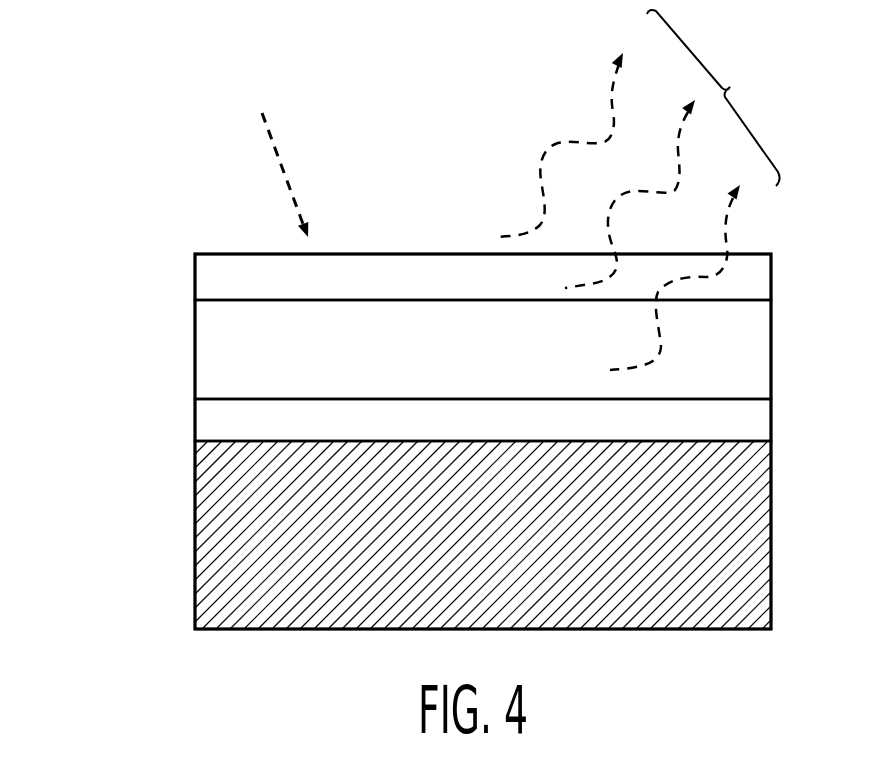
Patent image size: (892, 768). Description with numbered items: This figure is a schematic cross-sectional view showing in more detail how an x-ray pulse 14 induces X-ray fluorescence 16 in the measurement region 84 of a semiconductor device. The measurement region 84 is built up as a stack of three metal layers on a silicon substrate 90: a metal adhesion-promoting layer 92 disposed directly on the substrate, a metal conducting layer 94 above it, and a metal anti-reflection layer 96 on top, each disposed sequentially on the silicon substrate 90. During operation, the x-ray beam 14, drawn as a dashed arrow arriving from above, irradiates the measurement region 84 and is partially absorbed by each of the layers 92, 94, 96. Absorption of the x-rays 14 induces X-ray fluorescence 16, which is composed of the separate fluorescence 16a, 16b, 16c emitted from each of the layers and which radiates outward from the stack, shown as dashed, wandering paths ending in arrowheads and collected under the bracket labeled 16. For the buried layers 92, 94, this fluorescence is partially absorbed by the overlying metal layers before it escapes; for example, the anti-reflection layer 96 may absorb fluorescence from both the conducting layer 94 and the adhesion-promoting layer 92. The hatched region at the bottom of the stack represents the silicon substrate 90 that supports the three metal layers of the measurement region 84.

The x-ray pulse 14 is at (277, 151).
The X-ray fluorescence 16 is at (757, 137).
The fluorescence 16a is at (612, 112).
The fluorescence 16b is at (675, 132).
The fluorescence 16c is at (719, 213).
The measurement region 84 is at (146, 433).
The silicon substrate 90 is at (771, 580).
The metal adhesion-promoting layer 92 is at (771, 425).
The metal conducting layer 94 is at (771, 348).
The metal anti-reflection layer 96 is at (771, 285).